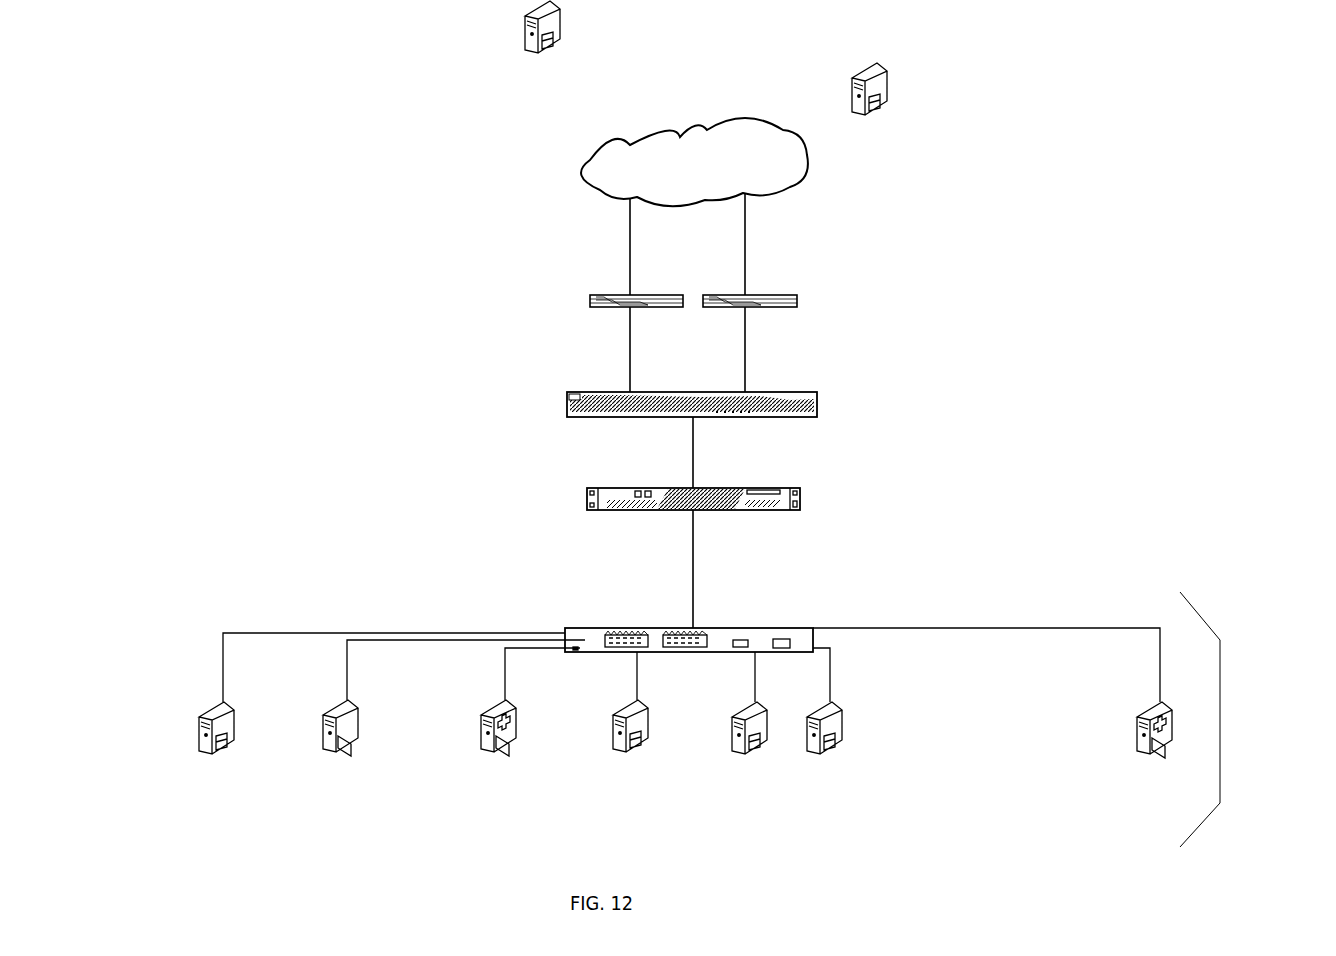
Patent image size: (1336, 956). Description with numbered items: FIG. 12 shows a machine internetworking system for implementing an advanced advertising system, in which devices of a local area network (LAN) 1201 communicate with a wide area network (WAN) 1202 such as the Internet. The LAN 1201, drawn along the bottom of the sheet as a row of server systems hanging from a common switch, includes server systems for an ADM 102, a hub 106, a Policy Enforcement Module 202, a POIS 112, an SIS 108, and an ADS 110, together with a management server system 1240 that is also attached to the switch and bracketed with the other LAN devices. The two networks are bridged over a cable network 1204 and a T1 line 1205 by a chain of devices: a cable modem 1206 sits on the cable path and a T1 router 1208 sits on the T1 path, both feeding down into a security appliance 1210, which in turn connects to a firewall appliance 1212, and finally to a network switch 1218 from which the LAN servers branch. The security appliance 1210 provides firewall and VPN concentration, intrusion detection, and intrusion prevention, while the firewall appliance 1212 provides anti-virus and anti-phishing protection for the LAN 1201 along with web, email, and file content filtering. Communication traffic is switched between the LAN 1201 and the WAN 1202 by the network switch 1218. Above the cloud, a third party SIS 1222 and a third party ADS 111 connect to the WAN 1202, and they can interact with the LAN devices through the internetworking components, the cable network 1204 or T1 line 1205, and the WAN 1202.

The wide area network 1202 is at (694, 162).
The third party SIS 1222 is at (628, 142).
The third party ADS 111 is at (790, 135).
The cable network 1204 is at (630, 243).
The T1 line 1205 is at (745, 243).
The cable modem 1206 is at (535, 341).
The T1 router 1208 is at (835, 342).
The security appliance 1210 is at (859, 388).
The firewall appliance 1212 is at (859, 483).
The network switch 1218 is at (689, 602).
The ADM 102 is at (377, 717).
The hub 106 is at (454, 717).
The Policy Enforcement Module 202 is at (516, 755).
The POIS 112 is at (630, 726).
The SIS 108 is at (744, 722).
The ADS 110 is at (845, 716).
The management server system 1240 is at (992, 746).
The local area network 1201 is at (1226, 719).